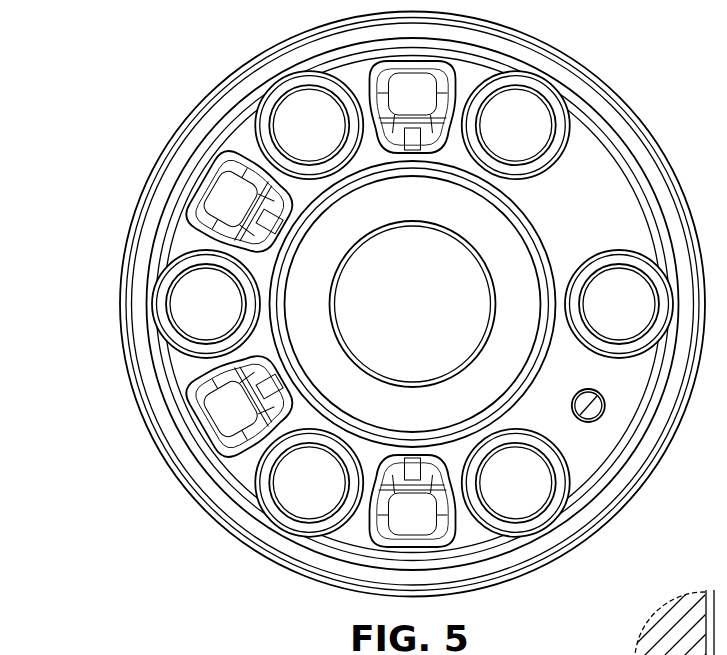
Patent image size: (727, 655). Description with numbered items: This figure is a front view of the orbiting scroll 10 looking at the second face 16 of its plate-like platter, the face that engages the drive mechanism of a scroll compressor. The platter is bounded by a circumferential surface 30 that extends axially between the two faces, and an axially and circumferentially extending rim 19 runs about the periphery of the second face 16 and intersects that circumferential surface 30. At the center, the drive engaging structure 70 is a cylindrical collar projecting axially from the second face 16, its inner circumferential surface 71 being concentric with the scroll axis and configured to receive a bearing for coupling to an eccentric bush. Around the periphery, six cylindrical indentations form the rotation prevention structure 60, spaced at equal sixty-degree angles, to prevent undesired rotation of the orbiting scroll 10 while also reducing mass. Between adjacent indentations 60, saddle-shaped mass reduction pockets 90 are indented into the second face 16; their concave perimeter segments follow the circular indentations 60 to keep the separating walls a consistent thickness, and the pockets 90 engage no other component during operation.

The orbiting scroll 10 is at (127, 96).
The second face 16 is at (587, 438).
The rim 19 is at (137, 356).
The circumferential surface 30 is at (120, 304).
The rotation prevention structure 60 is at (628, 303).
The drive engaging structure 70 is at (312, 217).
The inner circumferential surface 71 is at (497, 395).
The mass reduction pocket 90 is at (416, 98).